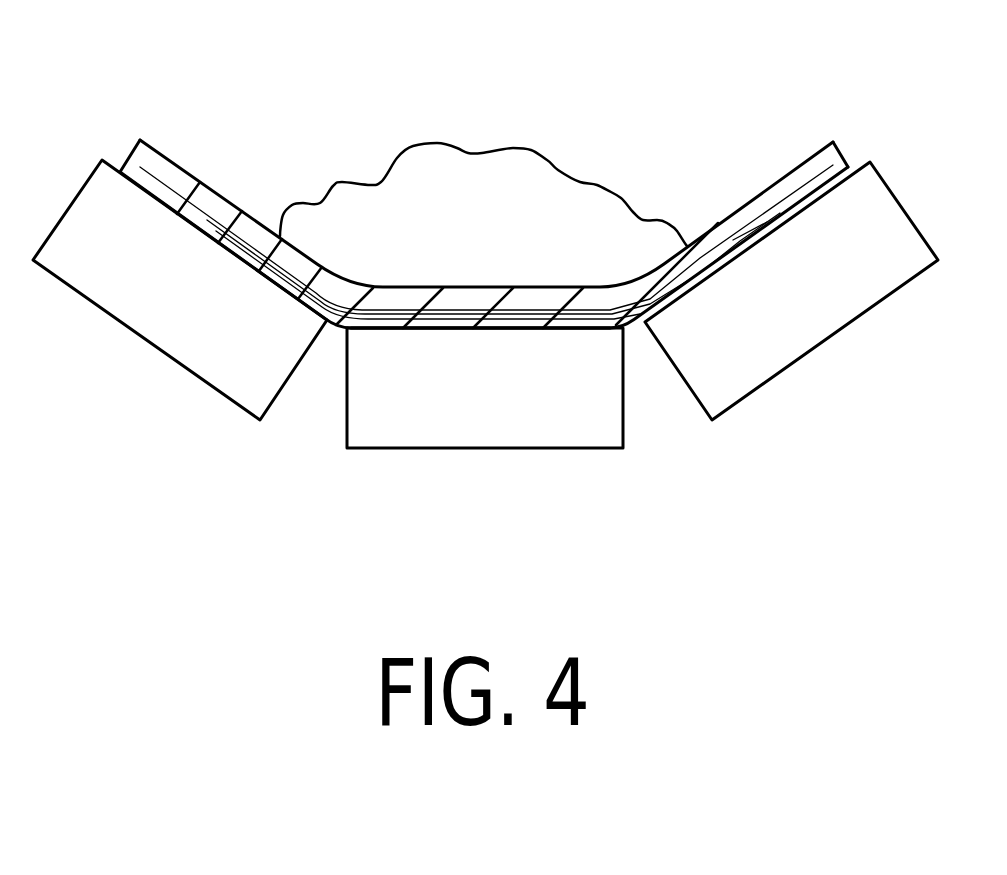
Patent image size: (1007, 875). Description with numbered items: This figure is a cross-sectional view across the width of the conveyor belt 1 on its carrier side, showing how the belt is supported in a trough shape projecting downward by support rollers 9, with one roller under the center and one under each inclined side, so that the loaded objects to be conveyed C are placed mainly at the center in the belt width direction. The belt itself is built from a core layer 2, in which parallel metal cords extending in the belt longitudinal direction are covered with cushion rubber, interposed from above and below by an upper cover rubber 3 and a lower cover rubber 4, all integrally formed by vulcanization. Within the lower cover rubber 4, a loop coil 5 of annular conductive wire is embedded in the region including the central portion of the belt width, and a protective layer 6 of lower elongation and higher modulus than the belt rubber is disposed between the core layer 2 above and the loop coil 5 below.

The conveyor belt 1 is at (265, 221).
The core layer 2 is at (177, 186).
The upper cover rubber 3 is at (740, 218).
The lower cover rubber 4 is at (447, 328).
The loop coil 5 is at (227, 247).
The protective layer 6 is at (213, 232).
The support roller 9 is at (112, 302).
The objects to be conveyed C is at (463, 157).